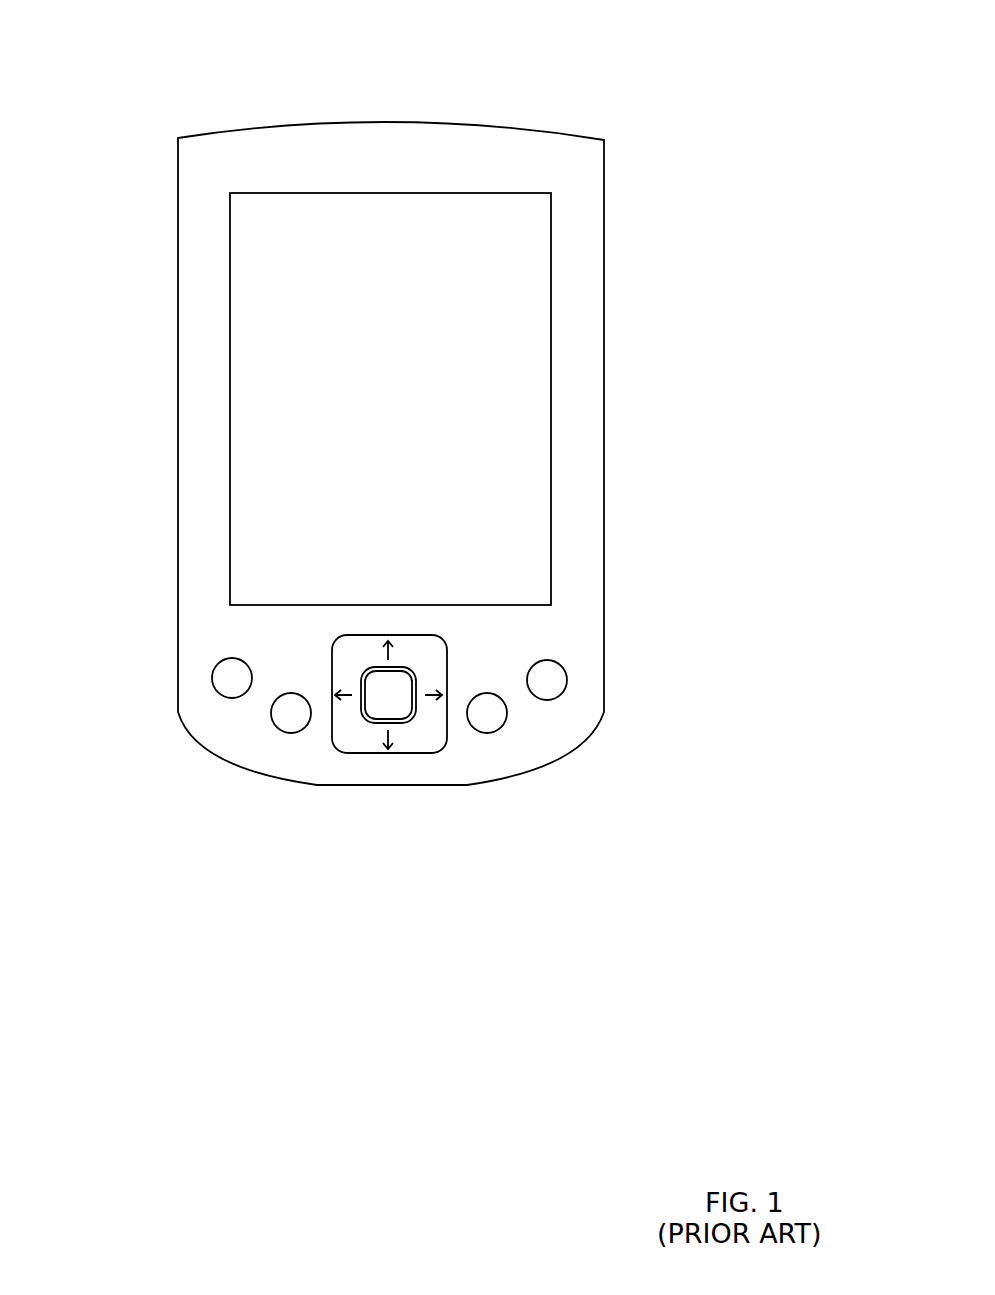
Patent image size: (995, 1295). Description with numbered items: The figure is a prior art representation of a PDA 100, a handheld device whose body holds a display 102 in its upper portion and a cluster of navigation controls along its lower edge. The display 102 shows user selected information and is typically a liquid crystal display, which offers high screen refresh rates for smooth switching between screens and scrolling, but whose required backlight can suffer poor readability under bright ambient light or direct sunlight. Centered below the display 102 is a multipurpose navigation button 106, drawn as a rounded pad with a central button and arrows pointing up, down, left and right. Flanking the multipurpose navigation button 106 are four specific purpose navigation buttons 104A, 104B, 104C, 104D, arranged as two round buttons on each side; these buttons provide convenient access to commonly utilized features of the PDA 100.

The PDA 100 is at (686, 44).
The display 102 is at (410, 408).
The specific purpose navigation button 104A is at (212, 682).
The specific purpose navigation button 104B is at (277, 726).
The specific purpose navigation button 104C is at (503, 724).
The specific purpose navigation button 104D is at (567, 683).
The multipurpose navigation button 106 is at (445, 748).